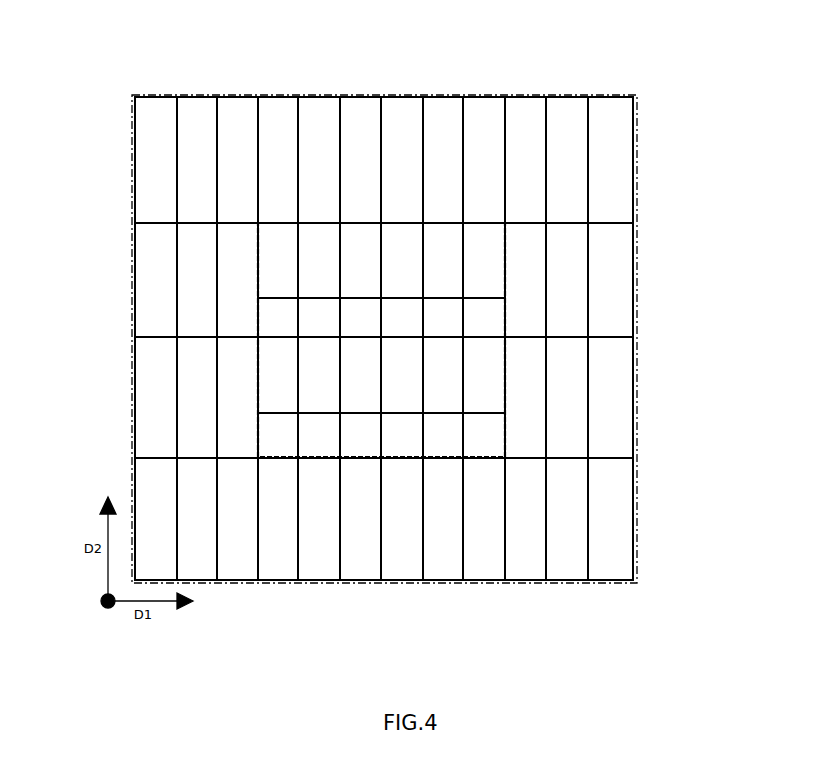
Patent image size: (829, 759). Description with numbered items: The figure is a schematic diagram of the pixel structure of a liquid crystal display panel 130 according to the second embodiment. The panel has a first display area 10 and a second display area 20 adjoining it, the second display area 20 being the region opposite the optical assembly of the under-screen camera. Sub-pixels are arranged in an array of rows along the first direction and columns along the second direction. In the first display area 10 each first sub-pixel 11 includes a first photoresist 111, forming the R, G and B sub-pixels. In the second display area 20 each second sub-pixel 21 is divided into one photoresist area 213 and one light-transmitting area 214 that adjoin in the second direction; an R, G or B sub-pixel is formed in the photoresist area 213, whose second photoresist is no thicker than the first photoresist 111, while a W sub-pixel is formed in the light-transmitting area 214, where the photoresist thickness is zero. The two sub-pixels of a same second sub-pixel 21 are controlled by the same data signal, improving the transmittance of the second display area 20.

The liquid crystal display panel 130 is at (411, 297).
The first display area 10 is at (131, 125).
The first sub-pixel 11 is at (618, 134).
The first photoresist 111 is at (618, 248).
The second display area 20 is at (258, 327).
The second sub-pixel 21 is at (607, 397).
The photoresist area 213 is at (495, 373).
The light-transmitting area 214 is at (490, 433).